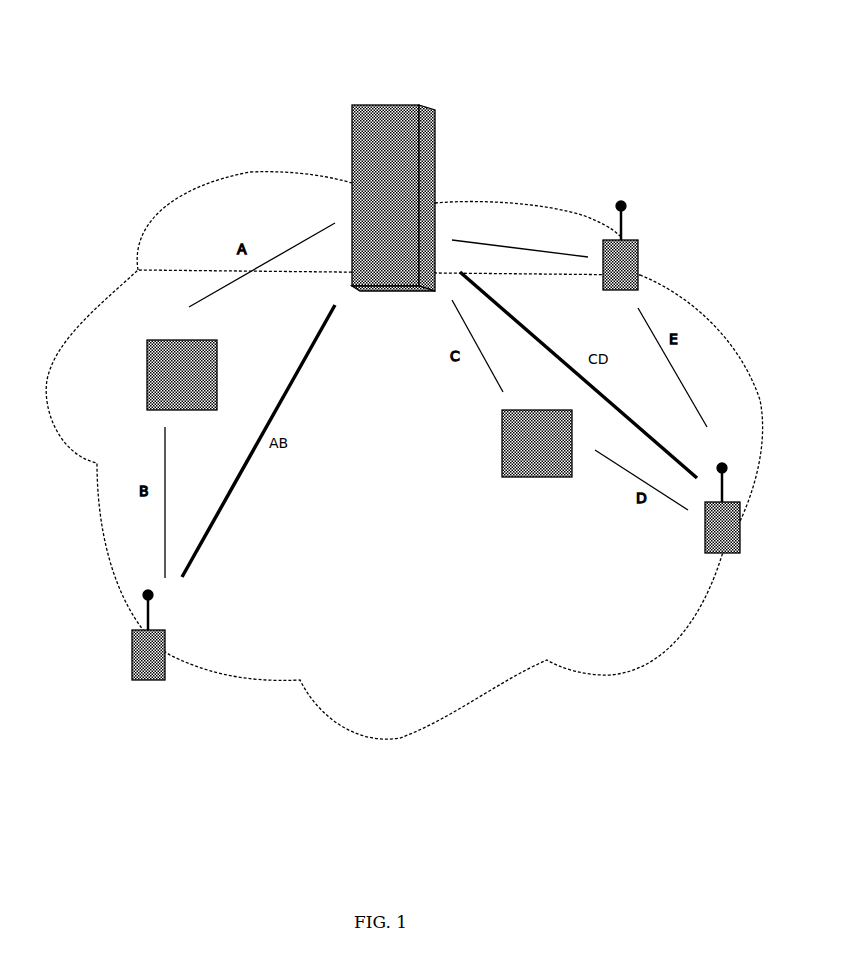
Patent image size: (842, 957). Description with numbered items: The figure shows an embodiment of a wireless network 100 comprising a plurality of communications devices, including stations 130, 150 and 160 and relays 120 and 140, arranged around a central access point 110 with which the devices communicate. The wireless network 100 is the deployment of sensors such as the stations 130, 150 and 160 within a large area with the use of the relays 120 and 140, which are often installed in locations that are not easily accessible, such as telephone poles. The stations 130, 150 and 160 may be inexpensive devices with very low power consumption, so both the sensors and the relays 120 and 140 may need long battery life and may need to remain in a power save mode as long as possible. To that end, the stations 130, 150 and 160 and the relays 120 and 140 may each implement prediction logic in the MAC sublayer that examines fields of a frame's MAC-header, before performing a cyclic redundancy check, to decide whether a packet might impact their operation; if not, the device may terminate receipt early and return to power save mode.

The wireless network 100 is at (611, 69).
The access point (AP) 110 is at (352, 122).
The relay 120 is at (147, 381).
The station 130 is at (146, 680).
The relay 140 is at (537, 478).
The station 150 is at (728, 528).
The station 160 is at (640, 266).